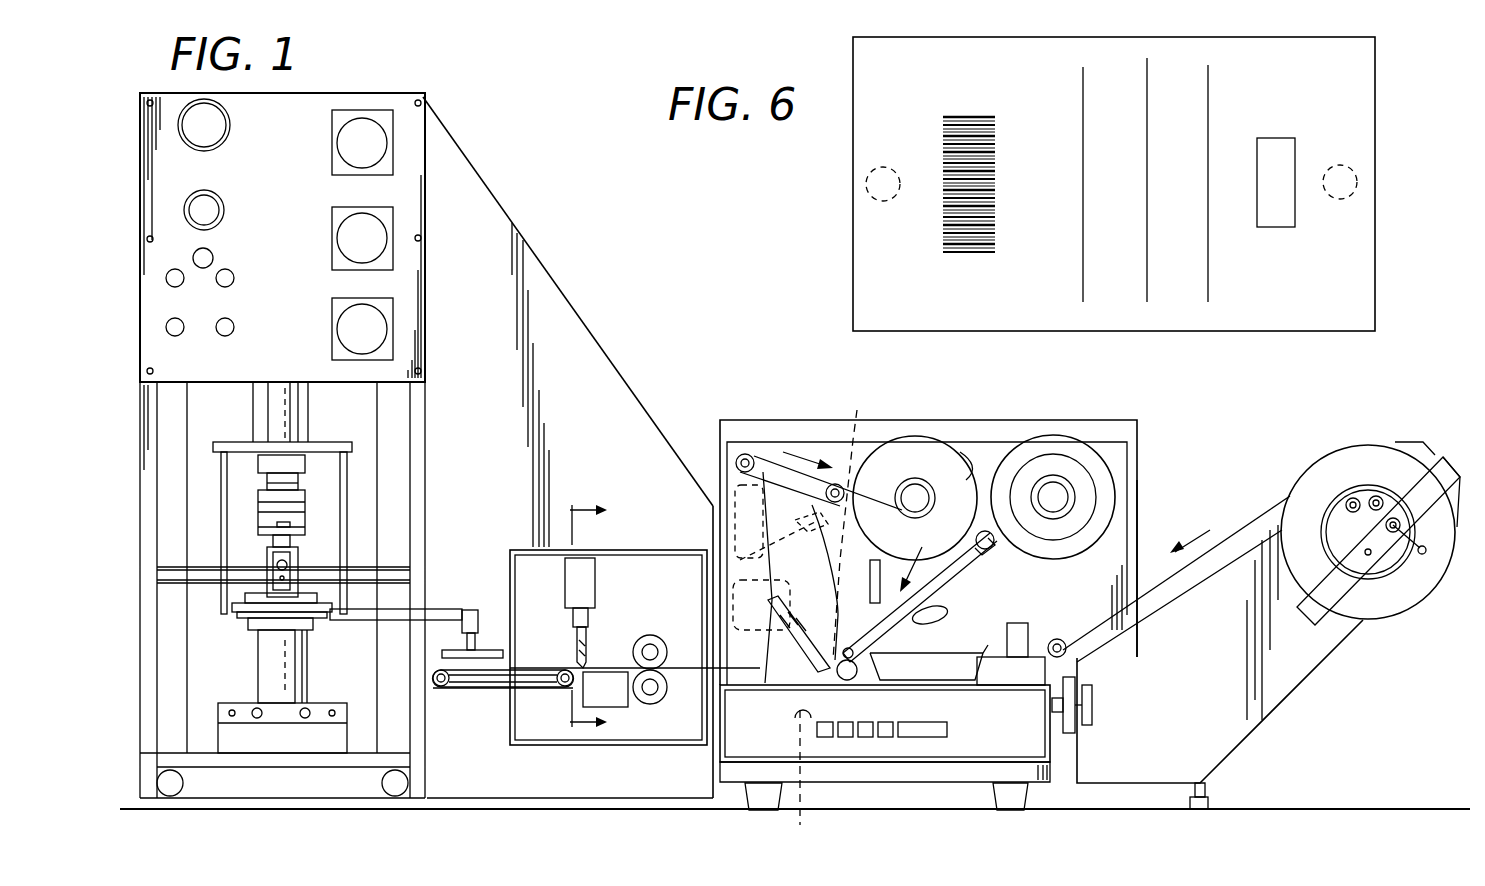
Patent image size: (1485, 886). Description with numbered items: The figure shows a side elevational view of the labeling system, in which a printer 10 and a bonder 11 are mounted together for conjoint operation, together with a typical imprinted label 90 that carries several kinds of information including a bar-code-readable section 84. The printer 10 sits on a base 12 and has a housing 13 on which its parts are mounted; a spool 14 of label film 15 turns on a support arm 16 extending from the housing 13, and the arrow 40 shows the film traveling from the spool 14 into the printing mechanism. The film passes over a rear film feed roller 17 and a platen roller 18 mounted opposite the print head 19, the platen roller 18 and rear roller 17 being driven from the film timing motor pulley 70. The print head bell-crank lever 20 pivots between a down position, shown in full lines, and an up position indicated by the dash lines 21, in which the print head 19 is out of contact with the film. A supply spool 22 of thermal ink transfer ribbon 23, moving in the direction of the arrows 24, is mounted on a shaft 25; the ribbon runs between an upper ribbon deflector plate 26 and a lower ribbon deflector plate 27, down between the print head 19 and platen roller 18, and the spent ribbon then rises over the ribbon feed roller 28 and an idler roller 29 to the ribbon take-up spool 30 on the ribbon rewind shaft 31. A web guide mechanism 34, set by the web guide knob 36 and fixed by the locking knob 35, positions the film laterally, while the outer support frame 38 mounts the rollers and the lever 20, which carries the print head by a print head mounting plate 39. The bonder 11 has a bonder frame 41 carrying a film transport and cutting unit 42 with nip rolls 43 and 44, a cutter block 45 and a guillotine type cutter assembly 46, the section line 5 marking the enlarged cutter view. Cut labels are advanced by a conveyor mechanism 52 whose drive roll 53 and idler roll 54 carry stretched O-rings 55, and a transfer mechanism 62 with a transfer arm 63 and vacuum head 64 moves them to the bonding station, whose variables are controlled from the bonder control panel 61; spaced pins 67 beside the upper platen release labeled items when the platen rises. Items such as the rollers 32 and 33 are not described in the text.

In FIG. 1, the printer 10 is at (845, 368).
In FIG. 1, the bonder 11 is at (536, 220).
In FIG. 1, the base 12 is at (1013, 803).
In FIG. 1, the housing 13 is at (1135, 520).
In FIG. 1, the spool 14 is at (1347, 458).
In FIG. 1, the label film 15 is at (1250, 505).
In FIG. 1, the support arm 16 is at (1275, 673).
In FIG. 1, the rear film feed roller 17 is at (880, 688).
In FIG. 1, the platen roller 18 is at (758, 683).
In FIG. 1, the print head 19 is at (800, 560).
In FIG. 1, the print head bell-crank lever 20 is at (822, 675).
In FIG. 1, the dash lines 21 is at (710, 540).
In FIG. 1, the supply spool 22 is at (1062, 455).
In FIG. 1, the thermal ink transfer ribbon 23 is at (975, 480).
In FIG. 1, the arrows 24 is at (808, 445).
In FIG. 1, the shaft 25 is at (1063, 490).
In FIG. 1, the upper ribbon deflector plate 26 is at (838, 485).
In FIG. 1, the lower ribbon deflector plate 27 is at (985, 555).
In FIG. 1, the ribbon feed roller 28 is at (720, 430).
In FIG. 1, the idler roller 29 is at (854, 520).
In FIG. 1, the ribbon take-up spool 30 is at (925, 440).
In FIG. 1, the ribbon rewind shaft 31 is at (913, 478).
In FIG. 1, the pivot arm 32 is at (888, 633).
In FIG. 1, the support post 33 is at (955, 613).
In FIG. 1, the web guide mechanism 34 is at (1015, 673).
In FIG. 1, the locking knob 35 is at (1078, 680).
In FIG. 1, the web guide knob 36 is at (1092, 705).
In FIG. 1, the outer support frame 38 is at (772, 450).
In FIG. 1, the print head mounting plate 39 is at (720, 660).
In FIG. 1, the arrow 40 is at (1205, 530).
In FIG. 1, the bonder frame 41 is at (455, 810).
In FIG. 1, the film transport and cutting unit 42 is at (572, 750).
In FIG. 1, the nip roll 43 is at (648, 636).
In FIG. 1, the nip roll 44 is at (655, 704).
In FIG. 1, the cutter block 45 is at (605, 708).
In FIG. 1, the guillotine type cutter assembly 46 is at (590, 565).
In FIG. 1, the section line 5- 5 is at (573, 617).
In FIG. 1, the conveyor mechanism 52 is at (500, 690).
In FIG. 1, the drive roll 53 is at (567, 640).
In FIG. 1, the idler roll 54 is at (445, 687).
In FIG. 1, the O-rings 55 is at (530, 670).
In FIG. 1, the bonder control panel 61 is at (424, 126).
In FIG. 1, the transfer mechanism 62 is at (357, 621).
In FIG. 1, the transfer arm 63 is at (393, 783).
In FIG. 1, the vacuum head 64 is at (488, 650).
In FIG. 1, the pins 67 is at (344, 502).
In FIG. 1, the film timing motor pulley 70 is at (803, 784).
In FIG. 6, the bar-code-readable section 84 is at (922, 158).
In FIG. 6, the label 90 is at (853, 52).